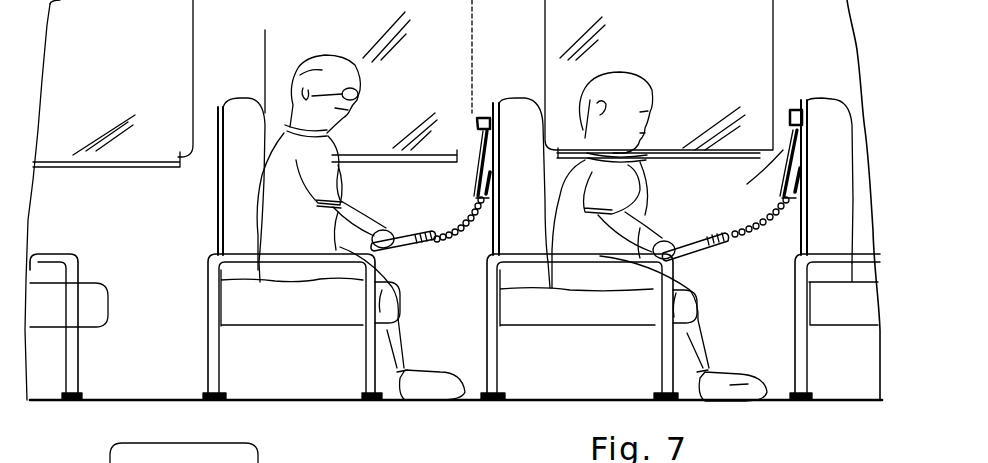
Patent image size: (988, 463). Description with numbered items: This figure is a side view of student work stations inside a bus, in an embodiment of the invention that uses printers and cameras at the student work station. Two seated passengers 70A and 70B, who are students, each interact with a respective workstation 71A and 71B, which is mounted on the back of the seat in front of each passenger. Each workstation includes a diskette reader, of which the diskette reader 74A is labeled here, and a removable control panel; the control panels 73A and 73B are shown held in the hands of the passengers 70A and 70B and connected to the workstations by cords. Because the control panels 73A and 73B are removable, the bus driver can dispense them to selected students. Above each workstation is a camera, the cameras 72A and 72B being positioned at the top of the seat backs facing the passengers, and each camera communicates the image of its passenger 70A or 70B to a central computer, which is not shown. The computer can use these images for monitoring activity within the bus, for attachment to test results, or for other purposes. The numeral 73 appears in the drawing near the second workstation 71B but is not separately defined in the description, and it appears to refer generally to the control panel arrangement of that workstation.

The passenger 70A is at (328, 43).
The passenger 70B is at (618, 65).
The camera 72A is at (478, 125).
The camera 72B is at (793, 118).
The workstation 71A is at (480, 173).
The workstation 71B is at (788, 133).
The seat-back display arm 73 is at (743, 187).
The removable control panel 73A is at (422, 233).
The removable control panel 73B is at (724, 242).
The diskette reader 74A is at (485, 210).